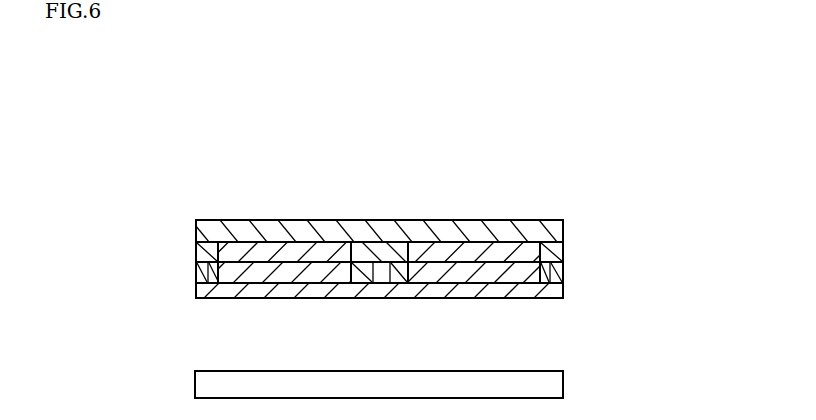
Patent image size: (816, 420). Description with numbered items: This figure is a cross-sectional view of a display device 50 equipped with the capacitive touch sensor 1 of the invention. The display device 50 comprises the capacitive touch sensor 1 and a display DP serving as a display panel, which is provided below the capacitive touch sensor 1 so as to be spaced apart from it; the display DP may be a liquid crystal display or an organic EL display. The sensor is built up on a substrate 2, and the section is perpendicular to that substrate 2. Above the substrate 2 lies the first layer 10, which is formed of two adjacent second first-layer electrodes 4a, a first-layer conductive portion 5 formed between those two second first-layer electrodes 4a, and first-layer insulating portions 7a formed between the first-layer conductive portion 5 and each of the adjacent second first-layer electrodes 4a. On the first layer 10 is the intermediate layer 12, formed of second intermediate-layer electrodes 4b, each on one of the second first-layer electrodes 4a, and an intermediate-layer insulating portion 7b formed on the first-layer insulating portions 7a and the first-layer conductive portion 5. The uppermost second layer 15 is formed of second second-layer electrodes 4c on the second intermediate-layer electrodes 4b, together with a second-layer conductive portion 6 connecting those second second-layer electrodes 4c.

The display device 50 is at (607, 127).
The capacitive touch sensor 1 is at (100, 157).
The substrate 2 is at (557, 290).
The second first-layer electrode 4a is at (272, 281).
The second intermediate-layer electrode 4b is at (232, 253).
The second second-layer electrode 4c is at (282, 230).
The first-layer conductive portion 5 is at (201, 266).
The second-layer conductive portion 6 is at (387, 230).
The first-layer insulating portion 7a is at (216, 284).
The intermediate-layer insulating portion 7b is at (196, 257).
The first layer 10 is at (190, 284).
The intermediate layer 12 is at (192, 250).
The second layer 15 is at (192, 225).
The display DP is at (208, 387).